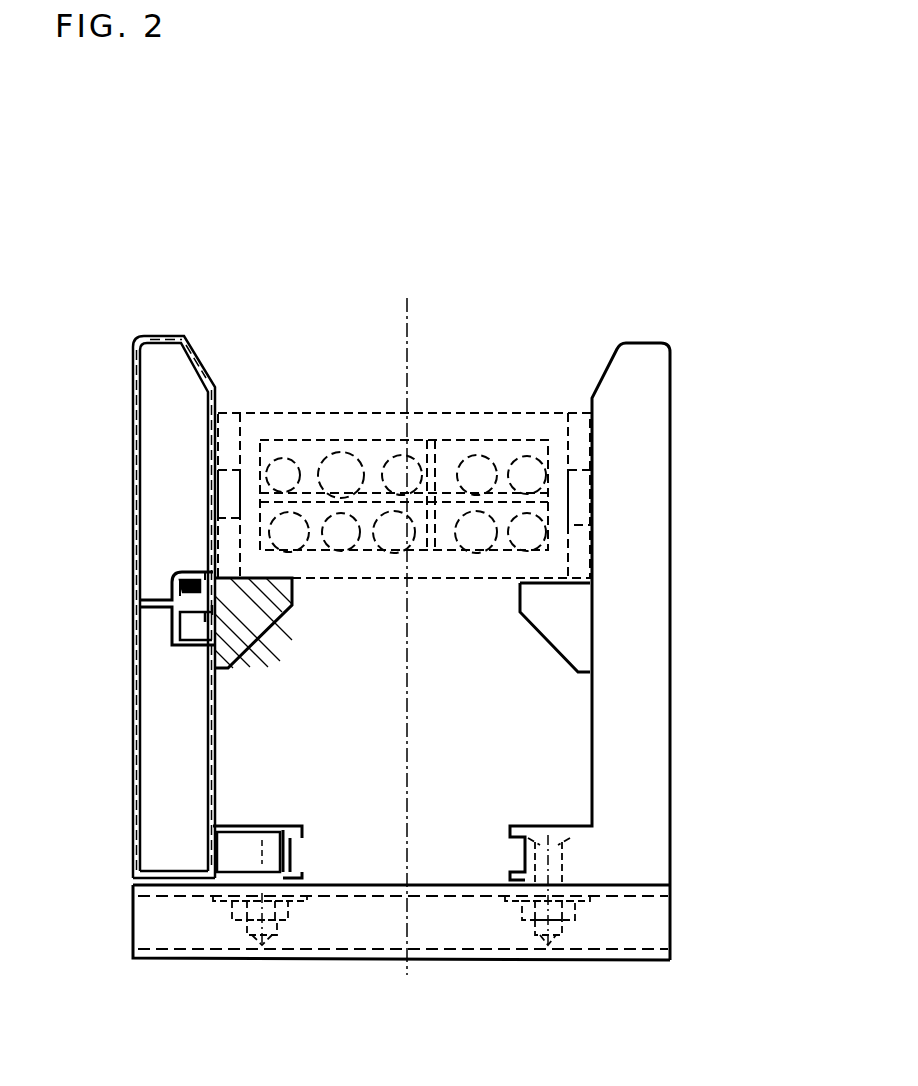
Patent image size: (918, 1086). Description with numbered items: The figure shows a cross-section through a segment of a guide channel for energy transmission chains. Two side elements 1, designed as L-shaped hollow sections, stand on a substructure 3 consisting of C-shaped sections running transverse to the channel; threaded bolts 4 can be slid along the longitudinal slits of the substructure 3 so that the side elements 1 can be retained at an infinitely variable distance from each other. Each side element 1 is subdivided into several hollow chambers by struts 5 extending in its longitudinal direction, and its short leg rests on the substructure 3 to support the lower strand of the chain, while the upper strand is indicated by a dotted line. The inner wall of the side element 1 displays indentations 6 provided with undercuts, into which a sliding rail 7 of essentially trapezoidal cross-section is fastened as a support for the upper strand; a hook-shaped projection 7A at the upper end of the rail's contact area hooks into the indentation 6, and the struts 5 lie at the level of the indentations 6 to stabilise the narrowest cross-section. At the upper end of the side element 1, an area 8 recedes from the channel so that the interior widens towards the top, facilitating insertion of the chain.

The side element 1 is at (637, 464).
The substructure 3 is at (655, 920).
The threaded bolt 4 is at (281, 960).
The strut 5 is at (160, 596).
The indentation 6 is at (190, 628).
The sliding rail 7 is at (197, 558).
The hook-shaped projection 7A is at (173, 566).
The receding area 8 is at (203, 352).